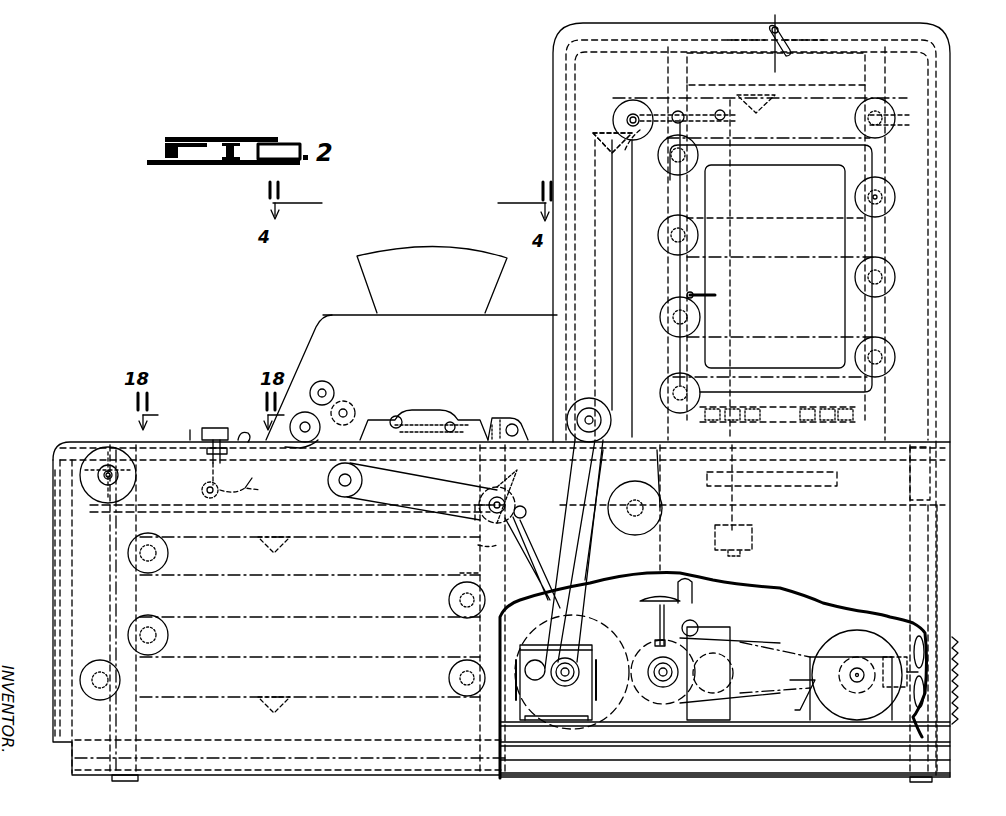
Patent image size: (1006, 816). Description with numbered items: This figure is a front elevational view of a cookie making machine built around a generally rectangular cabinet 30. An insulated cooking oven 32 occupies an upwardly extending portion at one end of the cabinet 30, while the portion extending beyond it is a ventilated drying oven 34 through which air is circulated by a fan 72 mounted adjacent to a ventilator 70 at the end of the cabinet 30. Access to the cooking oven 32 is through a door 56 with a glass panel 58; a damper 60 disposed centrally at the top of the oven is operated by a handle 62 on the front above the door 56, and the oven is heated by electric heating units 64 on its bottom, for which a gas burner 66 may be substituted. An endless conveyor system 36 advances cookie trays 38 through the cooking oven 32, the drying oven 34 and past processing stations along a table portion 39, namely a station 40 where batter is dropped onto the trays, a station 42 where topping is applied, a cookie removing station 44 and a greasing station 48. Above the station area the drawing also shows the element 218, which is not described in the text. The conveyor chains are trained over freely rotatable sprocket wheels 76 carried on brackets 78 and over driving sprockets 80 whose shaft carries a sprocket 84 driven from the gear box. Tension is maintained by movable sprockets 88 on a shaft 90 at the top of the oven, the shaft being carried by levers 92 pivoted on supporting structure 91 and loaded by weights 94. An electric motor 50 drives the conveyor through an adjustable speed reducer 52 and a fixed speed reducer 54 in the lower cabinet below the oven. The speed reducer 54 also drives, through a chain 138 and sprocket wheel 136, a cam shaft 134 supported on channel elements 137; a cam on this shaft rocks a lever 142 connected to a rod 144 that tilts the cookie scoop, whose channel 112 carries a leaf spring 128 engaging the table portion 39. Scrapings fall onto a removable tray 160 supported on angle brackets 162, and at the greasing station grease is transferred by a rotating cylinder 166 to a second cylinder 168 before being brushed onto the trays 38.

The cabinet 30 is at (963, 483).
The cooking oven 32 is at (950, 218).
The drying oven 34 is at (55, 604).
The endless conveyor system 36 is at (898, 182).
The cookie trays 38 is at (592, 134).
The table portion 39 is at (98, 440).
The station 40 is at (425, 420).
The station 42 is at (508, 408).
The cookie removing station 44 is at (198, 432).
The greasing station 48 is at (300, 449).
The electric motor 50 is at (858, 640).
The adjustable speed reducer 52 is at (722, 625).
The fixed speed reducer 54 is at (592, 648).
The door 56 is at (845, 186).
The glass panel 58 is at (792, 319).
The damper 60 is at (740, 42).
The handle 62 is at (790, 52).
The electric heating units 64 is at (862, 410).
The gas burner 66 is at (838, 478).
The ventilator 70 is at (955, 636).
The fan 72 is at (924, 657).
The sprocket wheels 76 is at (52, 454).
The brackets 78 is at (168, 625).
The driving sprockets 80 is at (590, 398).
The sprocket 84 is at (618, 400).
The movable sprockets 88 is at (622, 110).
The shaft 90 is at (640, 100).
The supporting structure 91 is at (660, 150).
The levers 92 is at (722, 125).
The weights 94 is at (755, 530).
The channel 112 is at (212, 427).
The leaf spring 128 is at (252, 428).
The cam shaft 134 is at (475, 520).
The sprocket wheel 136 is at (522, 527).
The channel elements 137 is at (460, 572).
The chain 138 is at (480, 553).
The lever 142 is at (258, 490).
The rod 144 is at (202, 488).
The removable tray 160 is at (330, 512).
The angle brackets 162 is at (150, 518).
The rotating cylinder 166 is at (352, 404).
The second cylinder 168 is at (326, 381).
The hopper 218 is at (428, 243).